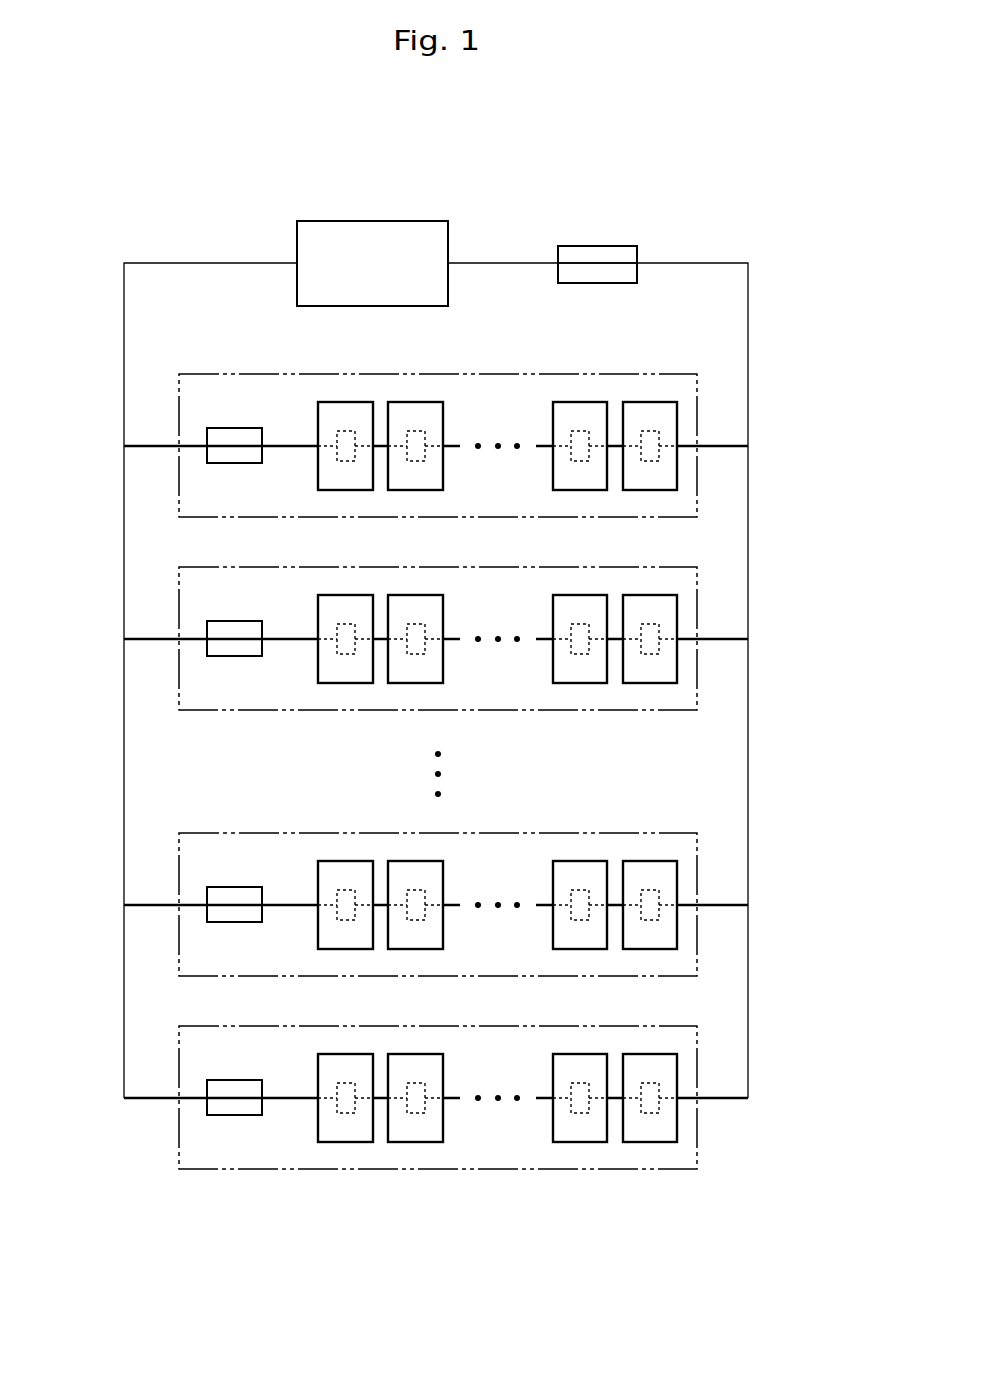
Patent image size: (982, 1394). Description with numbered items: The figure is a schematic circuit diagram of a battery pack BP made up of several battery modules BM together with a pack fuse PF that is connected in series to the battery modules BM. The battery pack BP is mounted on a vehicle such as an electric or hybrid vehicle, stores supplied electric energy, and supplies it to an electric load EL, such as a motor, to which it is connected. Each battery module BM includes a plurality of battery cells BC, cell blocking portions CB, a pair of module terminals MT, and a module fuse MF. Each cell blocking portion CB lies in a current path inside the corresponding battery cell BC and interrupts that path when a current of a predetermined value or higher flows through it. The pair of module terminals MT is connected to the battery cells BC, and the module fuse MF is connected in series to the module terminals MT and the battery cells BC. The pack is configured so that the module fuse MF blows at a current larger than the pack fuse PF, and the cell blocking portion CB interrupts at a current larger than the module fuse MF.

The battery pack BP is at (698, 178).
The electric load EL is at (380, 221).
The pack fuse PF is at (598, 246).
The battery module BM is at (663, 374).
The module terminal MT is at (178, 446).
The module fuse MF is at (232, 428).
The battery cell BC is at (340, 402).
The cell blocking portion CB is at (345, 462).